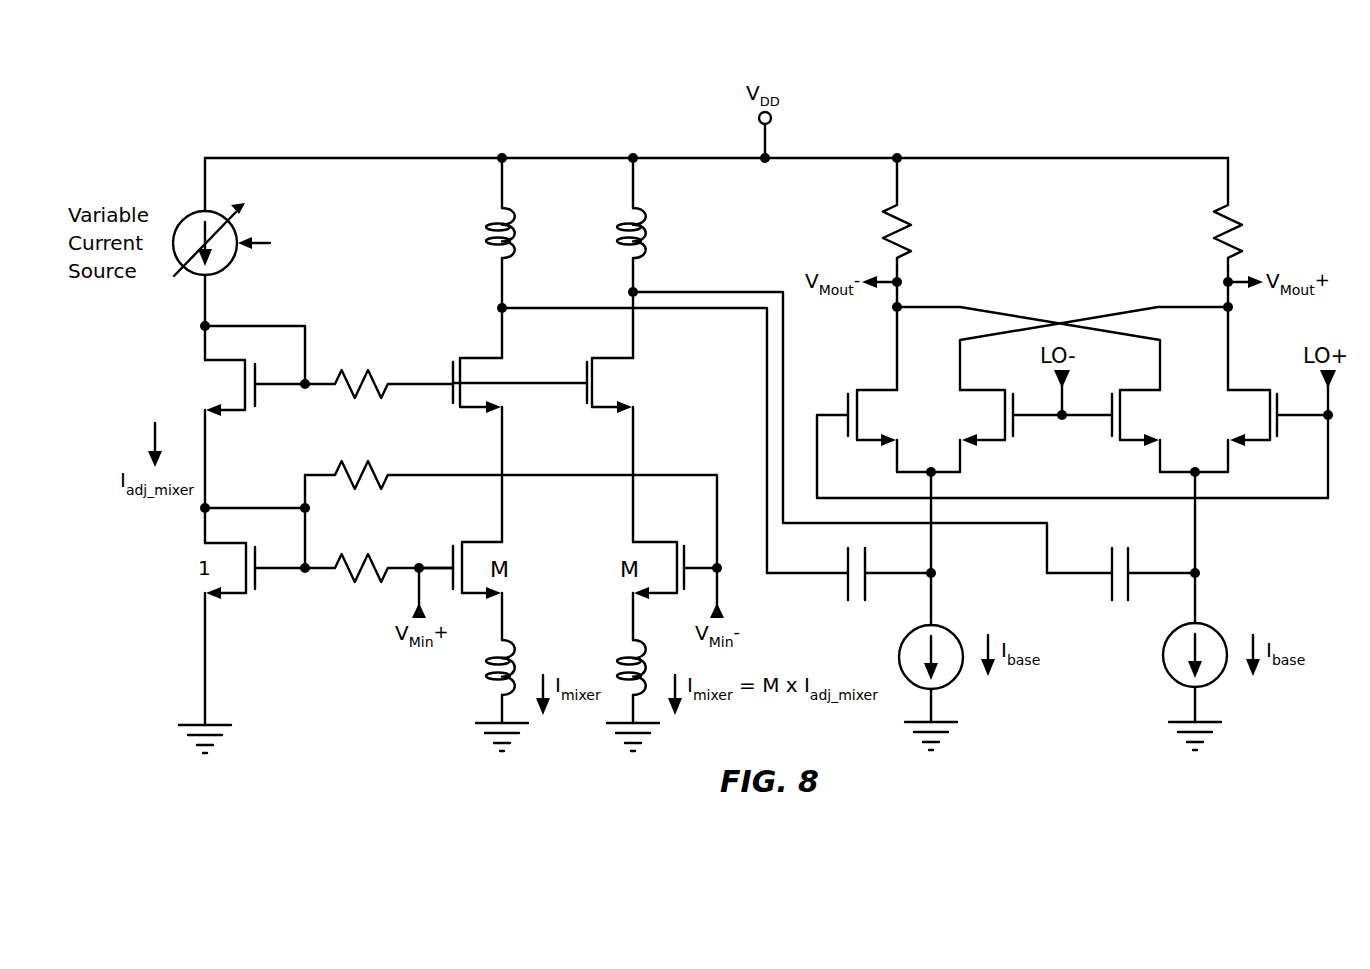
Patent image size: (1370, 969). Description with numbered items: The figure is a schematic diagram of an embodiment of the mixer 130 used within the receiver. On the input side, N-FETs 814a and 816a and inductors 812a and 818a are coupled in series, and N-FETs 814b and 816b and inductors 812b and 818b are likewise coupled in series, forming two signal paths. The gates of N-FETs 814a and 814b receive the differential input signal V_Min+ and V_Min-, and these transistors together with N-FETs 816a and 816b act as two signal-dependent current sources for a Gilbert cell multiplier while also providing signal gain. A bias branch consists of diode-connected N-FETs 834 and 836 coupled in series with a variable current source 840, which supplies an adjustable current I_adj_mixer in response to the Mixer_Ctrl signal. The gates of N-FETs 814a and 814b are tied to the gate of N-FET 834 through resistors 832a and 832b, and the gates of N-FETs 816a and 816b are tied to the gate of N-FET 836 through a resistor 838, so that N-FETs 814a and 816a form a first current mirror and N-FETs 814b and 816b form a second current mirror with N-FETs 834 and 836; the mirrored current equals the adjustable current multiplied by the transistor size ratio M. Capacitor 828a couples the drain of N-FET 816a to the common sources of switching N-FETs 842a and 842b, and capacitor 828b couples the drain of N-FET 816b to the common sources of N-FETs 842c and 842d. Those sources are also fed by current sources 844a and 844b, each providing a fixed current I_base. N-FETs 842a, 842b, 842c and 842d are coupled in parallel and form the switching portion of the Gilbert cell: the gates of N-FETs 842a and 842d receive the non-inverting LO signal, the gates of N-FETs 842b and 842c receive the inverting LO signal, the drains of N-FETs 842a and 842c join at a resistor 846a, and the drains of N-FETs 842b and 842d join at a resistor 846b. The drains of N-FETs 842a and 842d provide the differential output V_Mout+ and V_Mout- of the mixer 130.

The mixer 130 is at (173, 107).
The variable current source 840 is at (183, 216).
The N-FET 836 is at (256, 397).
The N-FET 834 is at (256, 580).
The resistor 838 is at (364, 372).
The resistor 832a is at (373, 555).
The resistor 832b is at (373, 463).
The N-FET 816a is at (478, 358).
The N-FET 816b is at (612, 358).
The N-FET 814a is at (478, 541).
The N-FET 814b is at (643, 541).
The inductor 818a is at (524, 200).
The inductor 818b is at (655, 200).
The inductor 812a is at (526, 636).
The inductor 812b is at (624, 651).
The resistor 846a is at (920, 203).
The resistor 846b is at (1251, 203).
The N-FET 842a is at (878, 391).
The N-FET 842b is at (1000, 382).
The N-FET 842c is at (1142, 391).
The N-FET 842d is at (1265, 382).
The capacitor 828a is at (846, 588).
The capacitor 828b is at (1110, 588).
The current source 844a is at (962, 622).
The current source 844b is at (1226, 622).